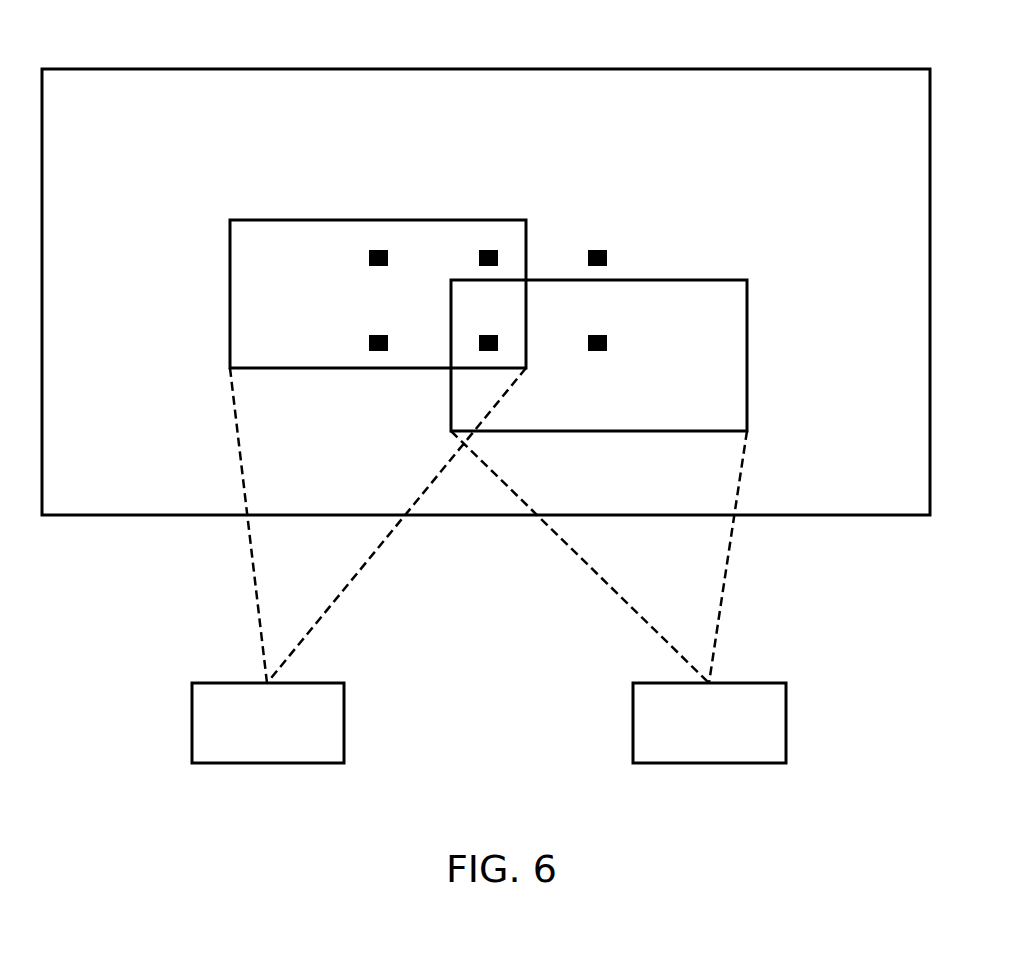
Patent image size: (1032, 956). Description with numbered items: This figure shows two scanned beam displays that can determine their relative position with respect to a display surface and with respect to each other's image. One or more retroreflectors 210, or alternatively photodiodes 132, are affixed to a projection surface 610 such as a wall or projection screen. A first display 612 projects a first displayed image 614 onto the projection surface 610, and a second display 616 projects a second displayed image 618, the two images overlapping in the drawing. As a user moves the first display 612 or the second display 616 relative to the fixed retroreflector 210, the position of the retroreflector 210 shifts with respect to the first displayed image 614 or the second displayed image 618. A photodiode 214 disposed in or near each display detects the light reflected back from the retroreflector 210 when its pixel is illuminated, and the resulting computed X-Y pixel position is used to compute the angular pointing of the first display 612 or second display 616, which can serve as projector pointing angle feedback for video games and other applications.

The projection surface 610 is at (930, 84).
The first displayed image 614 is at (437, 220).
The second displayed image 618 is at (696, 280).
The retroreflector 210 is at (598, 250).
The photodiode 132 is at (379, 336).
The photodiode 214 is at (255, 683).
The first display 612 is at (344, 710).
The second display 616 is at (786, 710).